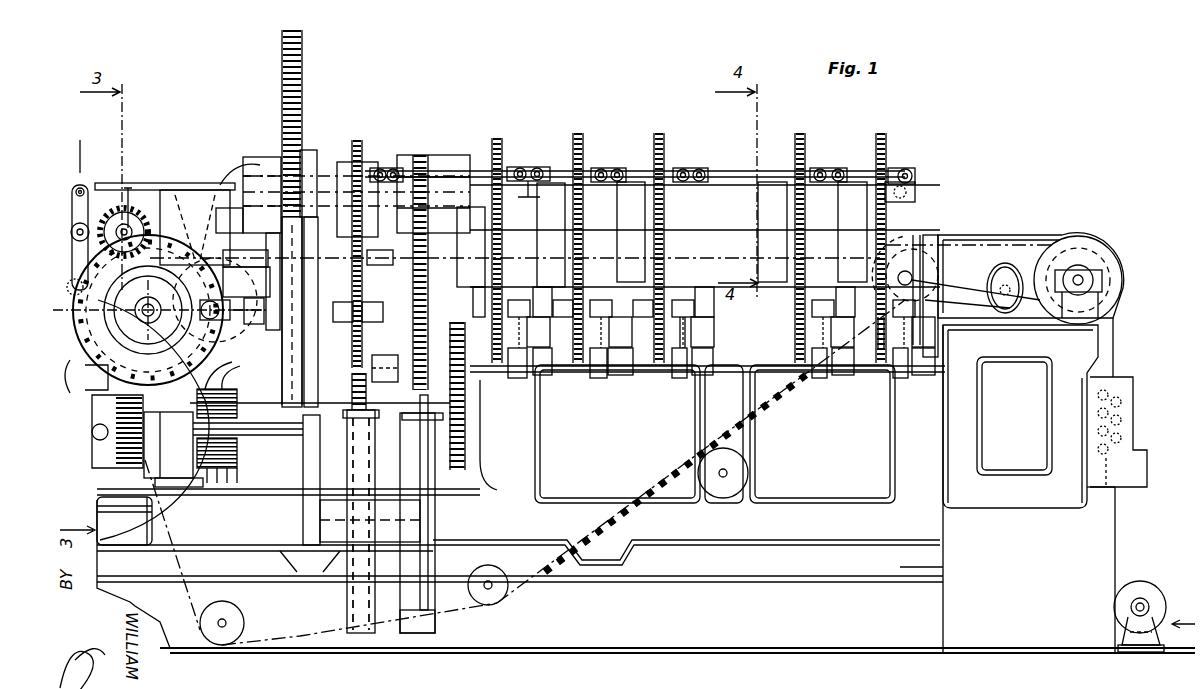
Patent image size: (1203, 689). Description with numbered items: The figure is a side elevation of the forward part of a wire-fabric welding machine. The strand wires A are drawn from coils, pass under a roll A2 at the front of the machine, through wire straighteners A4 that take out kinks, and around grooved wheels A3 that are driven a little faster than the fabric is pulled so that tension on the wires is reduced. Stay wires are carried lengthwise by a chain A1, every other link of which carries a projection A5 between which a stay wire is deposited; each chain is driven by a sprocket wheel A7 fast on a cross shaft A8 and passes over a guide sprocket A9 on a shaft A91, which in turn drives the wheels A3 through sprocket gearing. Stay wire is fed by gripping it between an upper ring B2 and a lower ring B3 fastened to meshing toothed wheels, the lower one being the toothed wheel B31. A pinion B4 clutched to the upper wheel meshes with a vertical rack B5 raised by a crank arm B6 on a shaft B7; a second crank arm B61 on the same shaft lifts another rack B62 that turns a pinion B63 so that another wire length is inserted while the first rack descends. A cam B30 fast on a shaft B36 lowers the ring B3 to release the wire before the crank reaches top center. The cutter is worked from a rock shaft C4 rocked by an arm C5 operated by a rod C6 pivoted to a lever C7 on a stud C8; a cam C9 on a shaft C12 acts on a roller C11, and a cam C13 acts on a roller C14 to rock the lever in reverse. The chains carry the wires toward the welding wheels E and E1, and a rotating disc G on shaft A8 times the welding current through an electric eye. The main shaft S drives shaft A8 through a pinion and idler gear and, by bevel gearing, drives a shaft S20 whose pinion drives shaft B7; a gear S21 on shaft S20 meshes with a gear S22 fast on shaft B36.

The strand wires A is at (1117, 542).
The chain A1 is at (758, 420).
The roll A2 is at (1150, 594).
The wheels A3 is at (1098, 248).
The wire straighteners A4 is at (1136, 404).
The projection A5 is at (790, 404).
The sprocket wheel A7 is at (150, 302).
The cross shaft A8 is at (140, 310).
The guide sprocket A9 is at (925, 237).
The shaft A91 is at (912, 280).
The upper ring B2 is at (662, 140).
The lower ring B3 is at (600, 380).
The cam B30 is at (682, 380).
The toothed wheel B31 is at (882, 380).
The shaft B36 is at (763, 366).
The pinion B4 is at (285, 170).
The vertical rack B5 is at (302, 80).
The crank arm B6 is at (303, 466).
The crank arm B61 is at (378, 602).
The rack B62 is at (421, 160).
The pinion B63 is at (440, 185).
The shaft B7 is at (303, 522).
The rock shaft C4 is at (552, 198).
The arm C5 is at (908, 170).
The rod C6 is at (150, 183).
The lever C7 is at (72, 206).
The stud C8 is at (70, 283).
The cam C9 is at (113, 208).
The roller C11 is at (71, 232).
The shaft C12 is at (129, 212).
The cam C13 is at (195, 227).
The roller C14 is at (215, 286).
The welding wheel E is at (240, 170).
The welding wheel E1 is at (230, 390).
The rotating disc G is at (72, 300).
The main shaft S is at (92, 432).
The shaft S20 is at (248, 446).
The gear S21 is at (465, 452).
The gear S22 is at (463, 380).